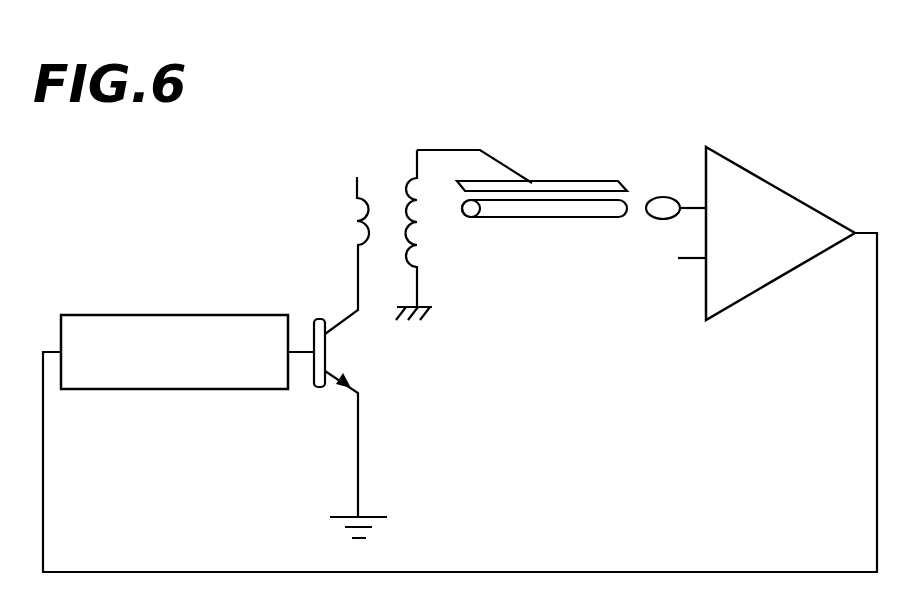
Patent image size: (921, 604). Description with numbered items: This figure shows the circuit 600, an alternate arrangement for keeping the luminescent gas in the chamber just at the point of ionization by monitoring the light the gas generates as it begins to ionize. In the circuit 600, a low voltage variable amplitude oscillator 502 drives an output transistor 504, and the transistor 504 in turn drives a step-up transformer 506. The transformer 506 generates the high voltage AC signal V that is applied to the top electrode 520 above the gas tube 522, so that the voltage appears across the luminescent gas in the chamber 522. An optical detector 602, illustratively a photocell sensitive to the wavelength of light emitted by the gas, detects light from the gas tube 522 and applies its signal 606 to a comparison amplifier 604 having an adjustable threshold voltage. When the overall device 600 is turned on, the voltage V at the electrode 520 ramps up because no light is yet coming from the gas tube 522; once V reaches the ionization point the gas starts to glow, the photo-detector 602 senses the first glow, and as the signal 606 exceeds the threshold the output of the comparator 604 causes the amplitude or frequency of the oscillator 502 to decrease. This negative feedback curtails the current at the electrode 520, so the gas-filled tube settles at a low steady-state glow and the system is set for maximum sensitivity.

The circuit 600 is at (802, 45).
The low voltage variable amplitude oscillator 502 is at (170, 314).
The output transistor 504 is at (317, 319).
The step-up transformer 506 is at (387, 198).
The top electrode 520 is at (557, 186).
The gas tube 522 is at (546, 218).
The optical detector 602 is at (657, 198).
The comparison amplifier 604 is at (793, 195).
The signal 606 is at (683, 200).